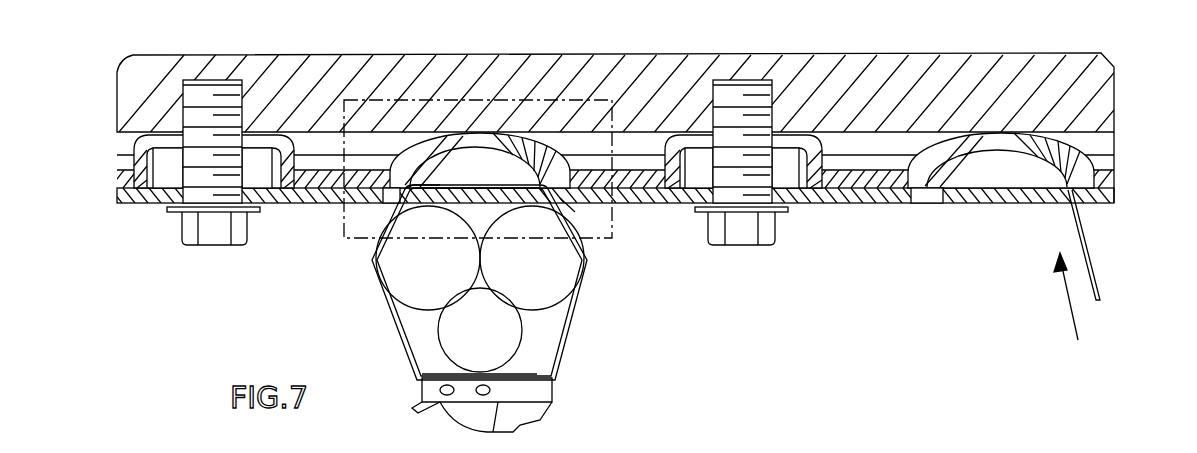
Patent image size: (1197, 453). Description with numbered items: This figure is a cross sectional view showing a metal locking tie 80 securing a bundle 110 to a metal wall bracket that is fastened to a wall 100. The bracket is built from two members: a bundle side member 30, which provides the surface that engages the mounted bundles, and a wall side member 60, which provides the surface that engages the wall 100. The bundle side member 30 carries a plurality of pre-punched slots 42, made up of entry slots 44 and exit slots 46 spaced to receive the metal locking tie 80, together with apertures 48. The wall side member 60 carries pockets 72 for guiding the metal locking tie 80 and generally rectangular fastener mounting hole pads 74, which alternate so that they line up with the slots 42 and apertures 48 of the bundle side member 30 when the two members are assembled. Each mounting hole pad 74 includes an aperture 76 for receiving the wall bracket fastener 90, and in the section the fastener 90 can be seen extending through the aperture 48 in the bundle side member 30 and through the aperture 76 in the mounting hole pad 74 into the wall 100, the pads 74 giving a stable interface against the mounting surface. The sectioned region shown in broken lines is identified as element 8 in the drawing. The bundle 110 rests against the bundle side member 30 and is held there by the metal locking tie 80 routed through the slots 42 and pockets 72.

The roof structure 8 is at (607, 237).
The bundle side member 30 is at (1110, 202).
The pre-punched slots 42 is at (399, 189).
The entry slots 44 is at (570, 198).
The exit slots 46 is at (399, 190).
The apertures 48 is at (192, 197).
The wall side member 60 is at (1114, 172).
The pockets 72 is at (478, 162).
The fastener mounting hole pads 74 is at (250, 130).
The aperture 76 is at (197, 133).
The metal locking tie 80 is at (390, 327).
The wall bracket fastener 90 is at (748, 95).
The wall 100 is at (888, 70).
The bundle 110 is at (400, 267).